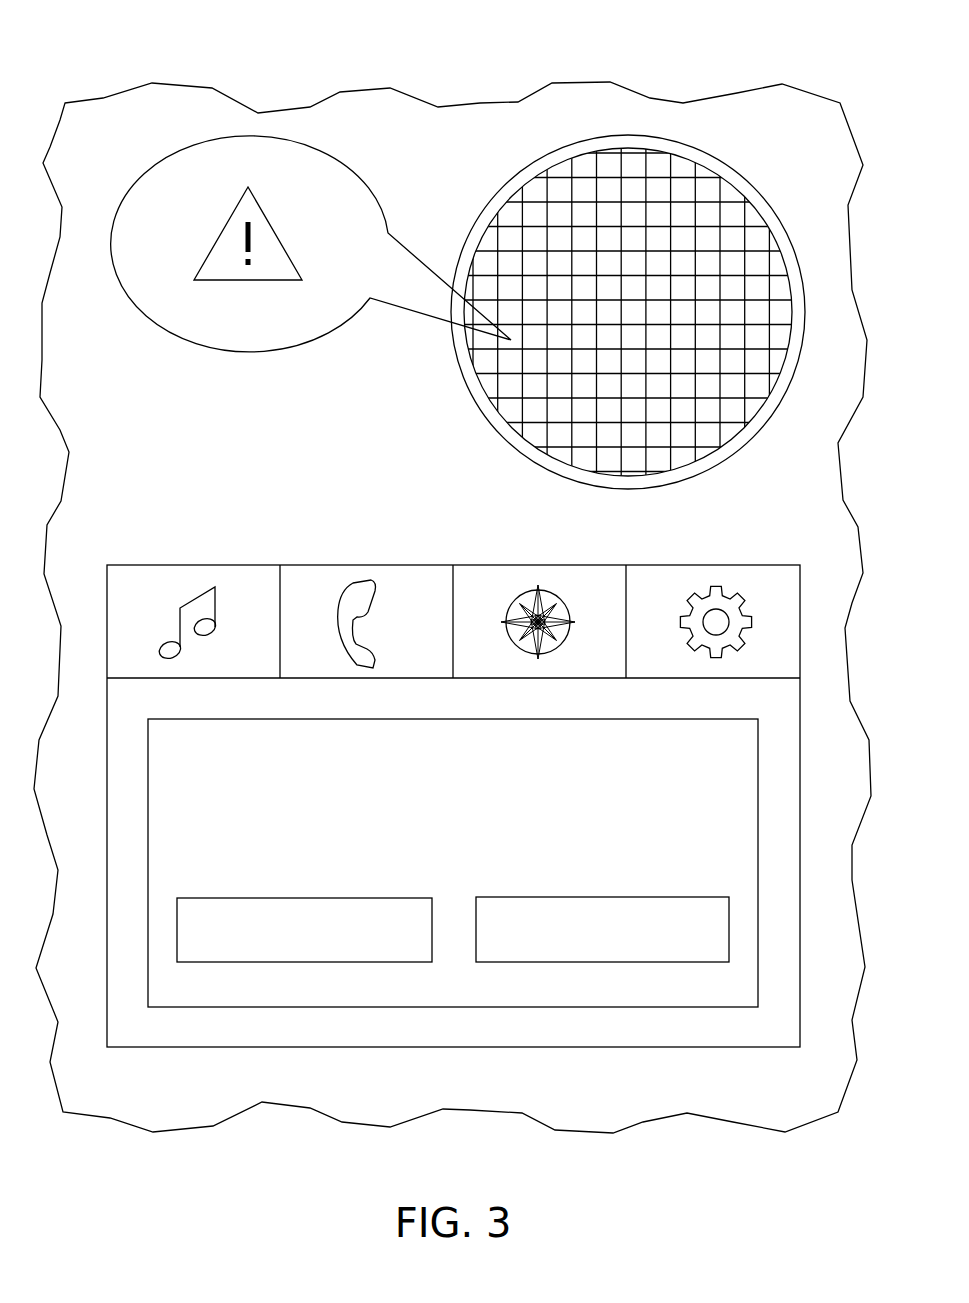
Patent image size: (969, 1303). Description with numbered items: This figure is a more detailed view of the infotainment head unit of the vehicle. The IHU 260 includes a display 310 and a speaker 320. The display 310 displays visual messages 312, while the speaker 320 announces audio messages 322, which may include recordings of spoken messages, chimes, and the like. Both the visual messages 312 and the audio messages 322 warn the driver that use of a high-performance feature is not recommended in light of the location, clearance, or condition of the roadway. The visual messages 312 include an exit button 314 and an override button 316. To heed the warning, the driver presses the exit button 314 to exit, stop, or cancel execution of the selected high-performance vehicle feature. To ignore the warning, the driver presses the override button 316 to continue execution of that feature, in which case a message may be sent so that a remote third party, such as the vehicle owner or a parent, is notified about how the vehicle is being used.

The IHU 260 is at (270, 71).
The display 310 is at (243, 565).
The visual messages 312 is at (758, 789).
The exit button 314 is at (603, 962).
The override button 316 is at (302, 962).
The speaker 320 is at (488, 422).
The audio messages 322 is at (203, 348).